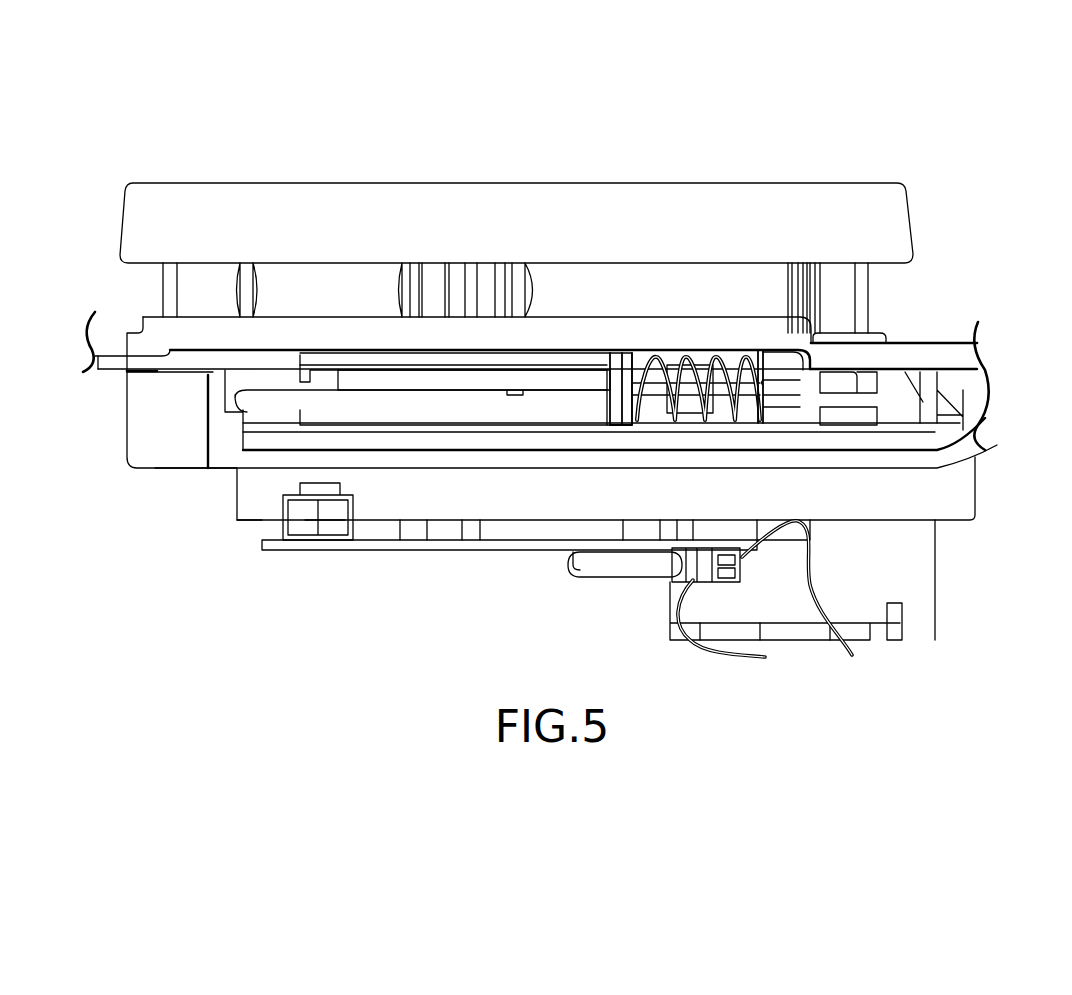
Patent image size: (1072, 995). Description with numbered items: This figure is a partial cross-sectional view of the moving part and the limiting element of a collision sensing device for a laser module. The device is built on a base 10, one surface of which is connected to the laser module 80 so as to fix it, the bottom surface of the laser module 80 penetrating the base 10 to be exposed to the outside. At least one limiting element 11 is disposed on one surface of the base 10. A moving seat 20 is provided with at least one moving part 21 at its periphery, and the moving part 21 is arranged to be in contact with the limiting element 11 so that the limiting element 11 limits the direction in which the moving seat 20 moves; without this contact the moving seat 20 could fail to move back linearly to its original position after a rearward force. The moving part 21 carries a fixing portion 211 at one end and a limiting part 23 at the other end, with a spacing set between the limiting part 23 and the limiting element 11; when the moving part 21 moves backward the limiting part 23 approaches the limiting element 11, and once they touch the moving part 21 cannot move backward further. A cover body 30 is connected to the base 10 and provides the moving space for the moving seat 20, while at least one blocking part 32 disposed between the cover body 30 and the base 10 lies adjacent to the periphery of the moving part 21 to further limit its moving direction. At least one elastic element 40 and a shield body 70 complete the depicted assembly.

The base 10 is at (255, 493).
The limiting element 11 is at (430, 377).
The moving seat 20 is at (877, 337).
The moving part 21 is at (573, 360).
The fixing portion 211 is at (686, 405).
The limiting part 23 is at (310, 377).
The cover body 30 is at (130, 327).
The blocking part 32 is at (765, 410).
The elastic element 40 is at (662, 400).
The shield body 70 is at (630, 205).
The laser module 80 is at (728, 280).